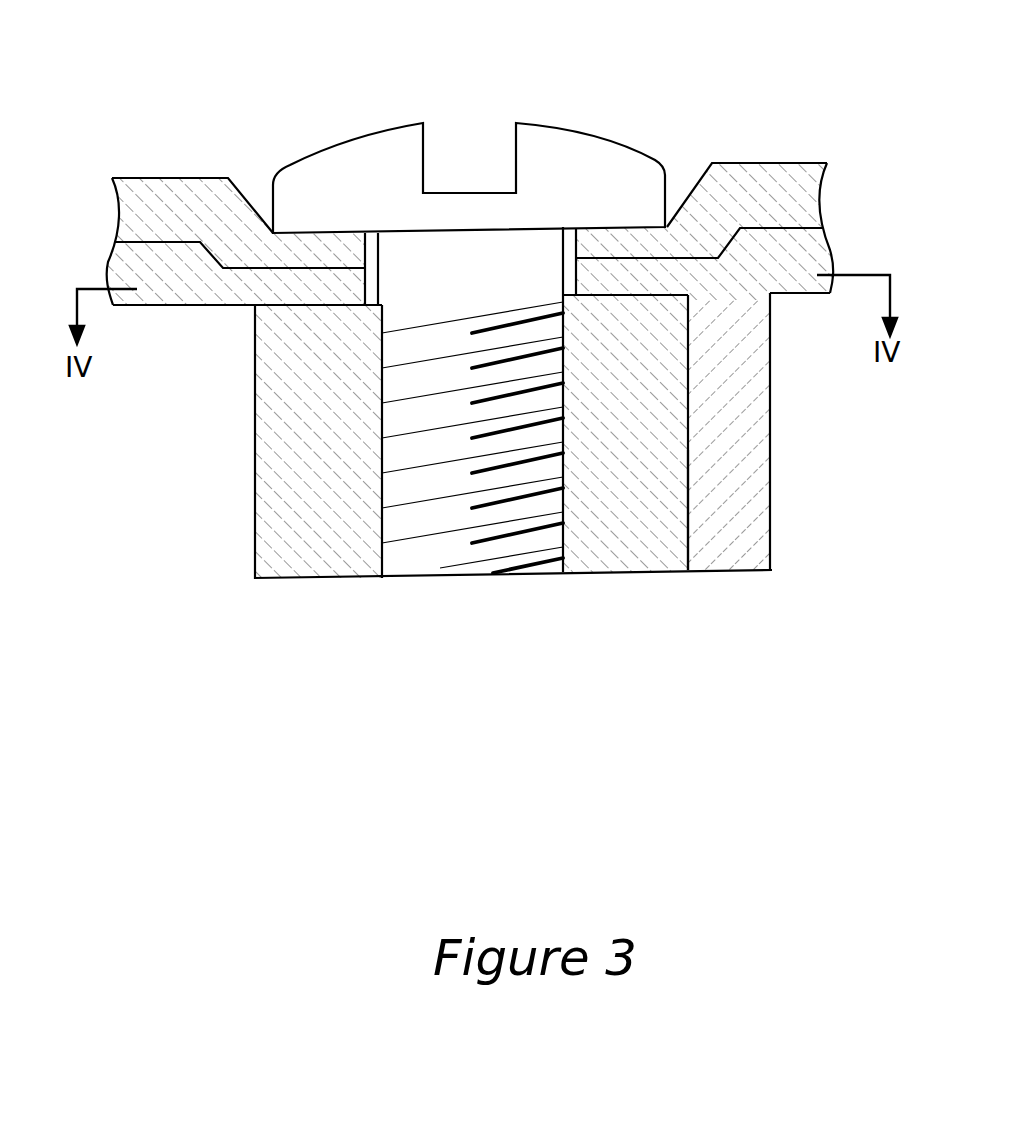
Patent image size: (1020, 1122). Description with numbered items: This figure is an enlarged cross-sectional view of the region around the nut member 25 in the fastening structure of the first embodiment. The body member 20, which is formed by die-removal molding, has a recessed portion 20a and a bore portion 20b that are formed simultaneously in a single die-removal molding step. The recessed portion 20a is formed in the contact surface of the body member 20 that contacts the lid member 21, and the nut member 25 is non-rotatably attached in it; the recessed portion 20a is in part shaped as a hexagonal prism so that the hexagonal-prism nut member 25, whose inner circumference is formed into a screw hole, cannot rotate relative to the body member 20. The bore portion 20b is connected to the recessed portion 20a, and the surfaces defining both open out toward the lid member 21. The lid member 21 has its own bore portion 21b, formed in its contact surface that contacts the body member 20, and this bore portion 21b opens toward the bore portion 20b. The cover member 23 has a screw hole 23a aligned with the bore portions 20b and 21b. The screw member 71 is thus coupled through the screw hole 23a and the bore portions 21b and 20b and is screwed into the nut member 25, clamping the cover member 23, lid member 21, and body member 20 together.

The body member 20 is at (793, 285).
The recessed portion 20a is at (690, 458).
The bore portion 20b is at (576, 283).
The lid member 21 is at (173, 268).
The bore portion 21b is at (378, 297).
The cover member 23 is at (810, 192).
The screw hole 23a is at (378, 245).
The nut member 25 is at (657, 381).
The screw member 71 is at (587, 133).